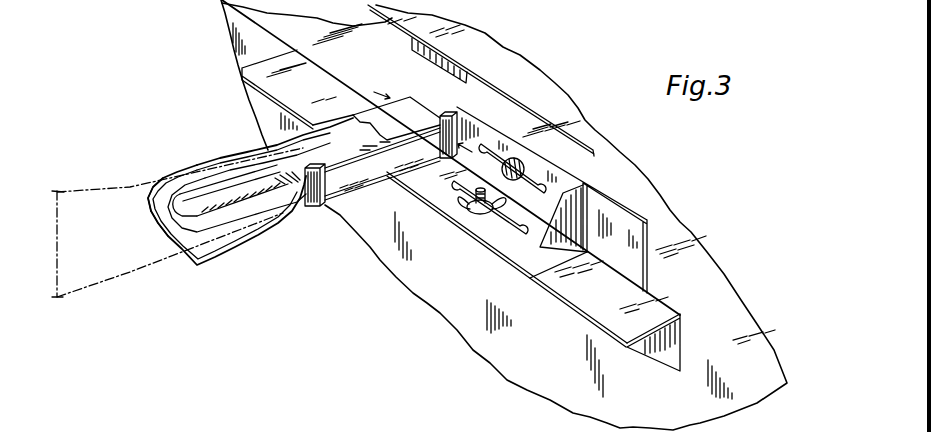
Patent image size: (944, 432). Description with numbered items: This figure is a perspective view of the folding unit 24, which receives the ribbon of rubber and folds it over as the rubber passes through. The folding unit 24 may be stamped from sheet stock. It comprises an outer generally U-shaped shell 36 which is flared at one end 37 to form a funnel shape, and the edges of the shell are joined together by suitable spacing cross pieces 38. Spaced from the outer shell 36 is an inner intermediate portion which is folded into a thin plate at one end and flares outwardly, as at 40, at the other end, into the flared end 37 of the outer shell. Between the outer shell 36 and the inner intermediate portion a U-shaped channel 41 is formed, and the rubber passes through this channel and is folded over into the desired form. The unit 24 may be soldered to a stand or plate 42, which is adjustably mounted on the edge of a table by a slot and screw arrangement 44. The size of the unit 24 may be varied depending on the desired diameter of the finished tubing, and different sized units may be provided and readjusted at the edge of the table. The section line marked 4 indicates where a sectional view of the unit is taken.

The folding unit 24 is at (260, 148).
The outer generally U-shaped shell 36 is at (180, 170).
The flared end 37 is at (158, 238).
The spacing cross pieces 38 is at (317, 207).
The outwardly flaring portion of the inner intermediate portion 40 is at (276, 180).
The U-shaped channel 41 is at (160, 208).
The stand or plate 42 is at (436, 196).
The slot and screw arrangement 44 is at (527, 181).
The section line 4- 4 is at (423, 121).